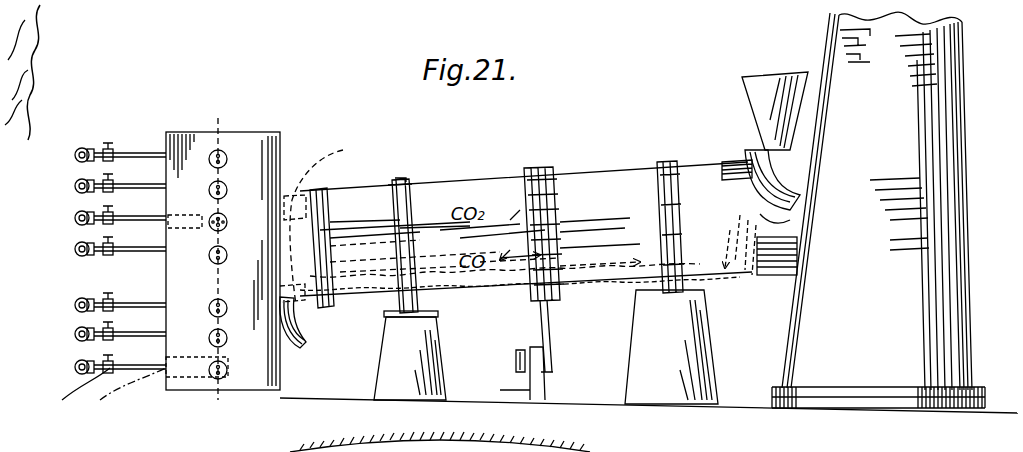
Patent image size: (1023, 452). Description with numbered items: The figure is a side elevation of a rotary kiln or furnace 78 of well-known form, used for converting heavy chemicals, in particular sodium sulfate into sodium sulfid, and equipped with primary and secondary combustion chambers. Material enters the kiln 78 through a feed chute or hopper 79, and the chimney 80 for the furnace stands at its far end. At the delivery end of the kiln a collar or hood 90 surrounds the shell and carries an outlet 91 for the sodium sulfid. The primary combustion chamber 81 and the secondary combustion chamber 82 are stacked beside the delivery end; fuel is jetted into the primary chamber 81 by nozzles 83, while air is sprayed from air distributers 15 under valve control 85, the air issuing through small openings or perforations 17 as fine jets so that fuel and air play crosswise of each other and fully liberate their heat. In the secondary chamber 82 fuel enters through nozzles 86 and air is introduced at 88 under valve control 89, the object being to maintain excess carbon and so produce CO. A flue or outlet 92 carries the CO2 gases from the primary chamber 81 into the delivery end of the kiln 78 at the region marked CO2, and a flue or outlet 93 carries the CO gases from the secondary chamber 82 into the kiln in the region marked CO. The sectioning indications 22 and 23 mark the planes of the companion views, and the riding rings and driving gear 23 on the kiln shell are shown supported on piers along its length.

The air distributer 15 is at (172, 405).
The openings or perforations 17 is at (190, 232).
The axis line 22 is at (213, 128).
The riding ring / gear 23 is at (562, 368).
The rotary kiln or furnace 78 is at (606, 180).
The feed chute or hopper 79 is at (765, 77).
The chimney 80 is at (963, 182).
The primary combustion chamber 81 is at (577, 451).
The secondary combustion chamber 82 is at (199, 336).
The fuel nozzles 83 is at (226, 156).
The valve control 85 is at (112, 146).
The fuel nozzles 86 is at (210, 346).
The air inlet 88 is at (127, 395).
The valve control 89 is at (80, 395).
The collar or hood 90 is at (326, 190).
The outlet 91 is at (302, 342).
The flue or outlet 92 is at (452, 447).
The flue or outlet 93 is at (283, 292).